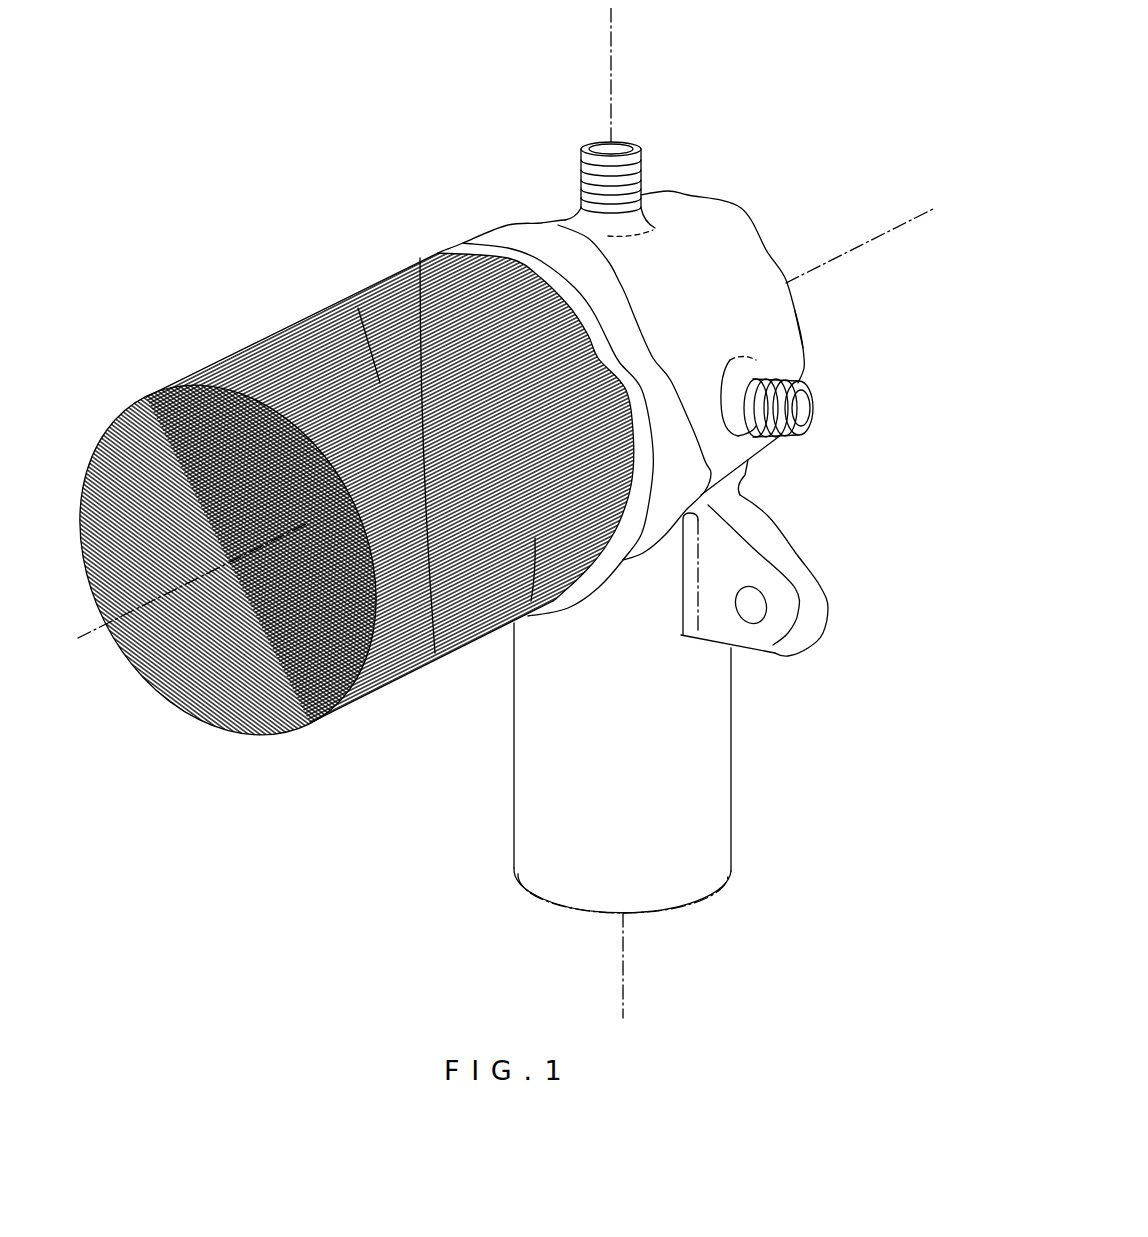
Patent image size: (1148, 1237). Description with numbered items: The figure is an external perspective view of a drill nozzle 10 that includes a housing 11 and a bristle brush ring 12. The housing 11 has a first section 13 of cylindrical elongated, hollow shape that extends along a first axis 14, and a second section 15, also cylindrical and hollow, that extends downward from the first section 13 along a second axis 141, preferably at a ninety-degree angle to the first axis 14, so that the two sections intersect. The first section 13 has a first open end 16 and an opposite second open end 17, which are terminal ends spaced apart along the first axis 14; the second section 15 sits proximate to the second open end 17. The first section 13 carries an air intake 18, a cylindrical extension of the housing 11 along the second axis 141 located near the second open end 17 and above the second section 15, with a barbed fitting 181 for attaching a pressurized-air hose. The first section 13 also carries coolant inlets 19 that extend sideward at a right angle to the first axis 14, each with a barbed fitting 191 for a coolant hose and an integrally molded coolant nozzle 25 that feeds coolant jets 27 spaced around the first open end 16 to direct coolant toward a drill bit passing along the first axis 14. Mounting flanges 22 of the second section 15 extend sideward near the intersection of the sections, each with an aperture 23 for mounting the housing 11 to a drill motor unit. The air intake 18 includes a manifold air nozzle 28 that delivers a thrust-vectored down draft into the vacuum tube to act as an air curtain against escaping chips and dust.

The drill nozzle 10 is at (272, 866).
The housing 11 is at (672, 160).
The bristle brush ring 12 is at (388, 228).
The first section 13 is at (700, 217).
The first axis 14 is at (845, 240).
The second axis 141 is at (598, 22).
The second section 15 is at (548, 722).
The first open end 16 is at (345, 291).
The second open end 17 is at (787, 303).
The air intake 18 is at (603, 160).
The barbed fitting 181 is at (641, 182).
The coolant inlets 19 is at (777, 392).
The barbed fitting 191 is at (791, 366).
The mounting flanges 22 is at (752, 510).
The aperture 23 is at (745, 600).
The coolant nozzle 25 is at (790, 407).
The coolant jets 27 is at (413, 250).
The manifold air nozzle 28 is at (601, 133).